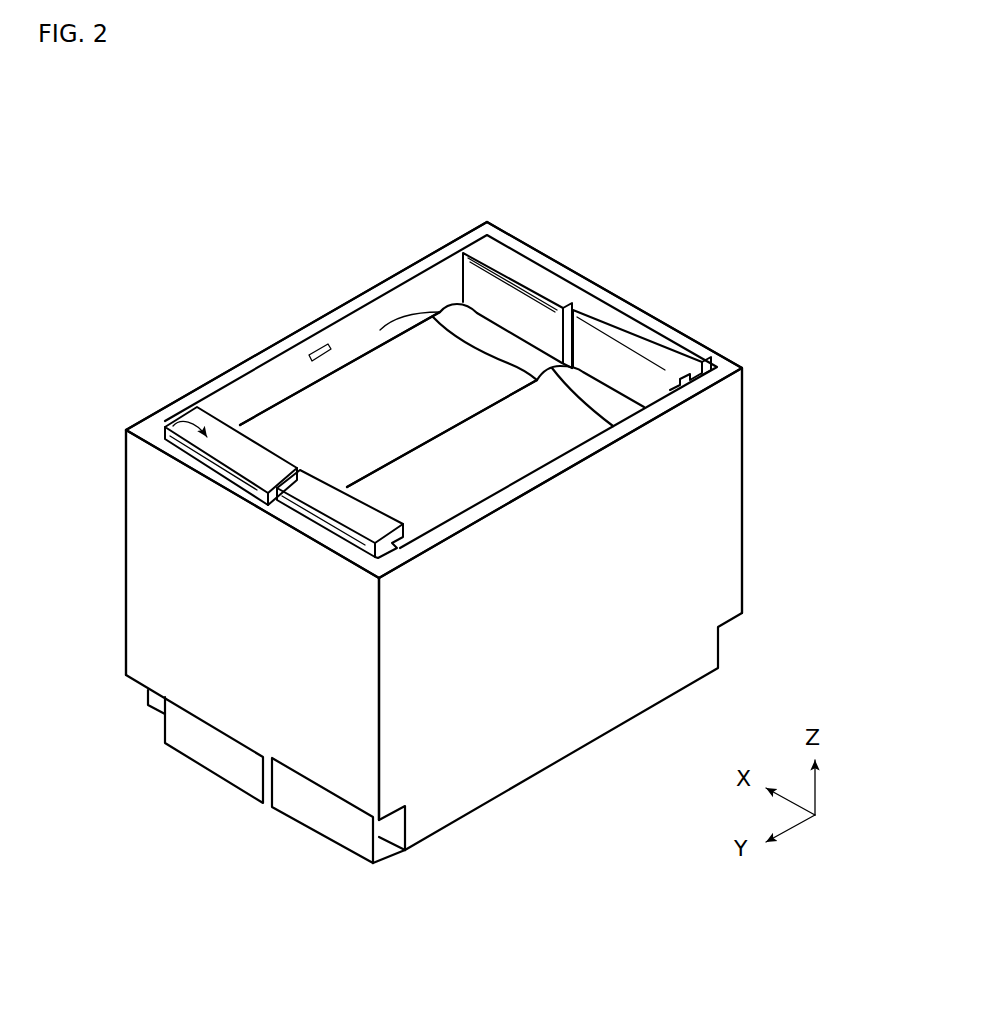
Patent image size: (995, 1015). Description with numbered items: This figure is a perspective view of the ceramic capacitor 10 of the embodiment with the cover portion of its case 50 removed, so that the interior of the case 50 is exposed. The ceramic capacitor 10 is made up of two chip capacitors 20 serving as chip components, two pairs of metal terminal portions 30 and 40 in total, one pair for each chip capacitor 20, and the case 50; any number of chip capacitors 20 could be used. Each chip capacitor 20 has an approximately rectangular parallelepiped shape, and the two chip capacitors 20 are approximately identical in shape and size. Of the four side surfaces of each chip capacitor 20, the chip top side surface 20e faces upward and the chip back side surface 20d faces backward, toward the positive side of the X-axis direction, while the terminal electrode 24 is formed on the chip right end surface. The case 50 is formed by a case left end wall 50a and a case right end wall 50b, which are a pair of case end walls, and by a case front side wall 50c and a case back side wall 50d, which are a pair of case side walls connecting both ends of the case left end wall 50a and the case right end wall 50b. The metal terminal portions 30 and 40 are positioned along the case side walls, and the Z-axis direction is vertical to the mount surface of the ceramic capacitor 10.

The ceramic capacitor 10 is at (665, 247).
The chip capacitor 20 is at (418, 352).
The chip back side surface 20d is at (380, 342).
The chip top side surface 20e is at (400, 412).
The terminal electrode 24 is at (486, 330).
The metal terminal portion 30 is at (160, 427).
The metal terminal portion 40 is at (522, 268).
The case 50 is at (760, 366).
The case left end wall 50a is at (249, 632).
The case right end wall 50b is at (685, 336).
The case front side wall 50c is at (582, 617).
The case back side wall 50d is at (288, 342).